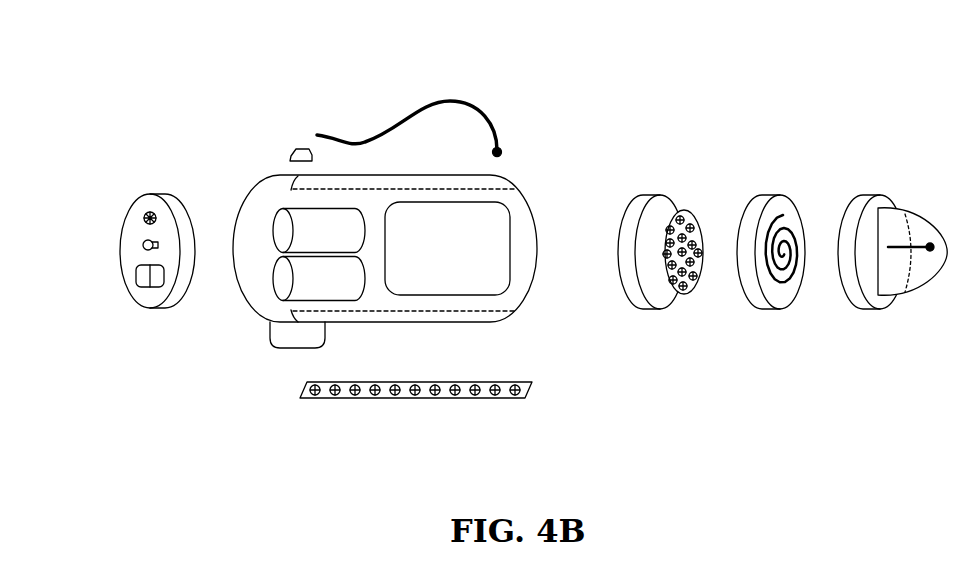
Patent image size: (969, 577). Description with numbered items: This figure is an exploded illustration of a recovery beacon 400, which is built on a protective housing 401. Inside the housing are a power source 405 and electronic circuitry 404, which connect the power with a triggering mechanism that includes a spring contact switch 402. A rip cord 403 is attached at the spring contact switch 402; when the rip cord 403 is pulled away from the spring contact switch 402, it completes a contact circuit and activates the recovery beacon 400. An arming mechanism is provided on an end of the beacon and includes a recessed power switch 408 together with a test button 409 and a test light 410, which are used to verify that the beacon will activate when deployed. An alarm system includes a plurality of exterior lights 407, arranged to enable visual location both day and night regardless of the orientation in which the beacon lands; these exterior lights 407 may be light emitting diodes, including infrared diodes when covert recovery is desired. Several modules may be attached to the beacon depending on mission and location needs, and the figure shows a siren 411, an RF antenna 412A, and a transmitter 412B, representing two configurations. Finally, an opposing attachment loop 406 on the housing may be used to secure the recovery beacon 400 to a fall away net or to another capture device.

The recovery beacon 400 is at (600, 54).
The protective housing 401 is at (250, 192).
The spring contact switch 402 is at (293, 147).
The rip cord 403 is at (460, 100).
The electronic circuitry 404 is at (475, 232).
The power source 405 is at (275, 282).
The attachment loop 406 is at (287, 350).
The exterior lights 407 is at (435, 383).
The recessed power switch 408 is at (136, 277).
The test button 409 is at (142, 246).
The test light 410 is at (143, 218).
The siren 411 is at (682, 210).
The RF antenna 412A is at (782, 212).
The transmitter 412B is at (878, 205).